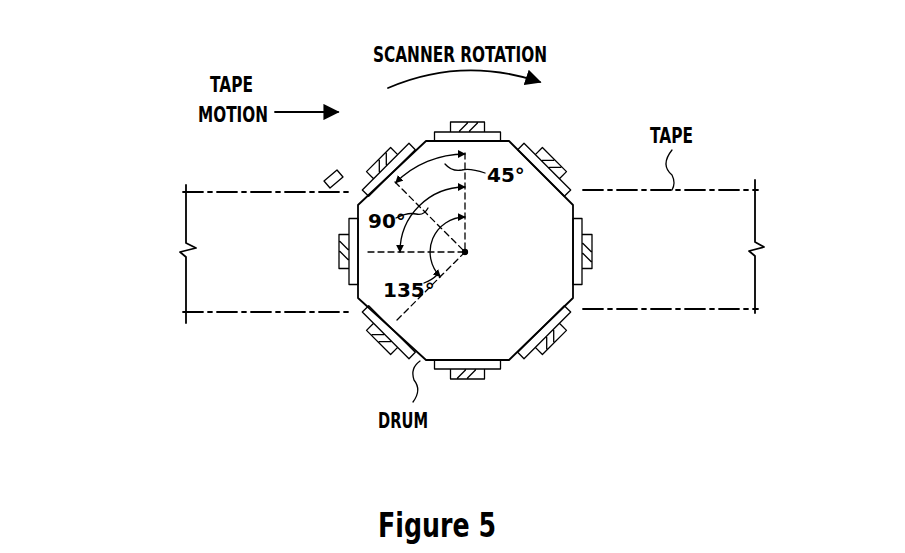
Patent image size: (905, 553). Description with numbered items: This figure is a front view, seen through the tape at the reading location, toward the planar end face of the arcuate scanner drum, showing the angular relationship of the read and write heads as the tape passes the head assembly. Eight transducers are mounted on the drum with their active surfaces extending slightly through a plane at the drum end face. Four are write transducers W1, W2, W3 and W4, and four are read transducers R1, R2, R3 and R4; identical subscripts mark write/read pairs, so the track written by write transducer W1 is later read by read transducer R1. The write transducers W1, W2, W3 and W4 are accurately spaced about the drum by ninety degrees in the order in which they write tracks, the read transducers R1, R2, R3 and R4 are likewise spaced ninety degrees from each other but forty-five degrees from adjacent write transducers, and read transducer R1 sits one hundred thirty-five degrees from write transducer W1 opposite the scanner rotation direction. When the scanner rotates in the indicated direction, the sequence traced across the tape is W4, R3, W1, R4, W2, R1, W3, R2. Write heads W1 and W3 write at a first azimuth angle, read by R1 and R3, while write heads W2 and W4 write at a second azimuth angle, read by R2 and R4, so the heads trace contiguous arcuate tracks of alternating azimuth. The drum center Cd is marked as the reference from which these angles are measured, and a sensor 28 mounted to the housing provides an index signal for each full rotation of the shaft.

The sensor 28 is at (322, 177).
The write transducer W1 is at (340, 263).
The write transducer W2 is at (475, 380).
The write transducer W3 is at (593, 262).
The write transducer W4 is at (464, 122).
The read transducer R1 is at (547, 349).
The read transducer R2 is at (556, 150).
The read transducer R3 is at (372, 150).
The read transducer R4 is at (372, 338).
The drum center Cd is at (468, 255).